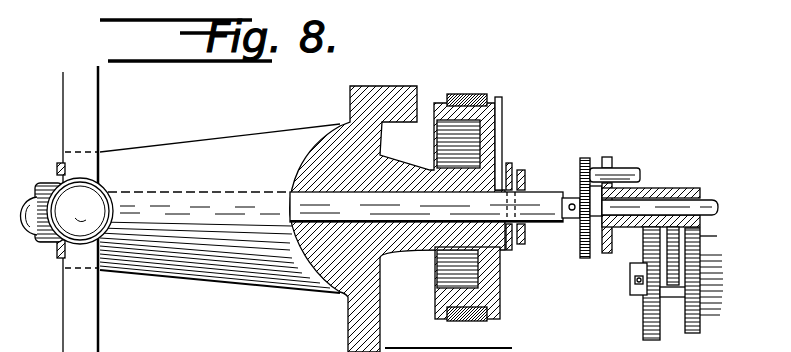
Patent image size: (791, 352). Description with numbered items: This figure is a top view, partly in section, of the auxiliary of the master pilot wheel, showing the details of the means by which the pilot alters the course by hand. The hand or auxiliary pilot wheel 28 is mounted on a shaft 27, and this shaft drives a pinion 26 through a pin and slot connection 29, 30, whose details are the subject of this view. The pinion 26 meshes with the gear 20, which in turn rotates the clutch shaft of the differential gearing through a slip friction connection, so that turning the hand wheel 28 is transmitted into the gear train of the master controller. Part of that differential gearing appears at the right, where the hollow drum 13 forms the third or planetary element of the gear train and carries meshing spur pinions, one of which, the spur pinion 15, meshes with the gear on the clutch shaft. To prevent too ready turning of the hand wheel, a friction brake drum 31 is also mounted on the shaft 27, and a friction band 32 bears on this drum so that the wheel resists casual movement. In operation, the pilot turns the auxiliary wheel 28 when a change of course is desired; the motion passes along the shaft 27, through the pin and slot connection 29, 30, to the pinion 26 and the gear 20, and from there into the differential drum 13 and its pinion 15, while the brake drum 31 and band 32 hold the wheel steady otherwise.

The hollow drum 13 is at (709, 318).
The spur pinion 15 is at (491, 347).
The gear 20 is at (640, 312).
The pinion 26 is at (650, 187).
The shaft 27 is at (531, 198).
The auxiliary pilot wheel 28 is at (70, 137).
The pin 29 is at (626, 168).
The slot 30 is at (603, 157).
The friction brake drum 31 is at (495, 107).
The friction band 32 is at (455, 94).